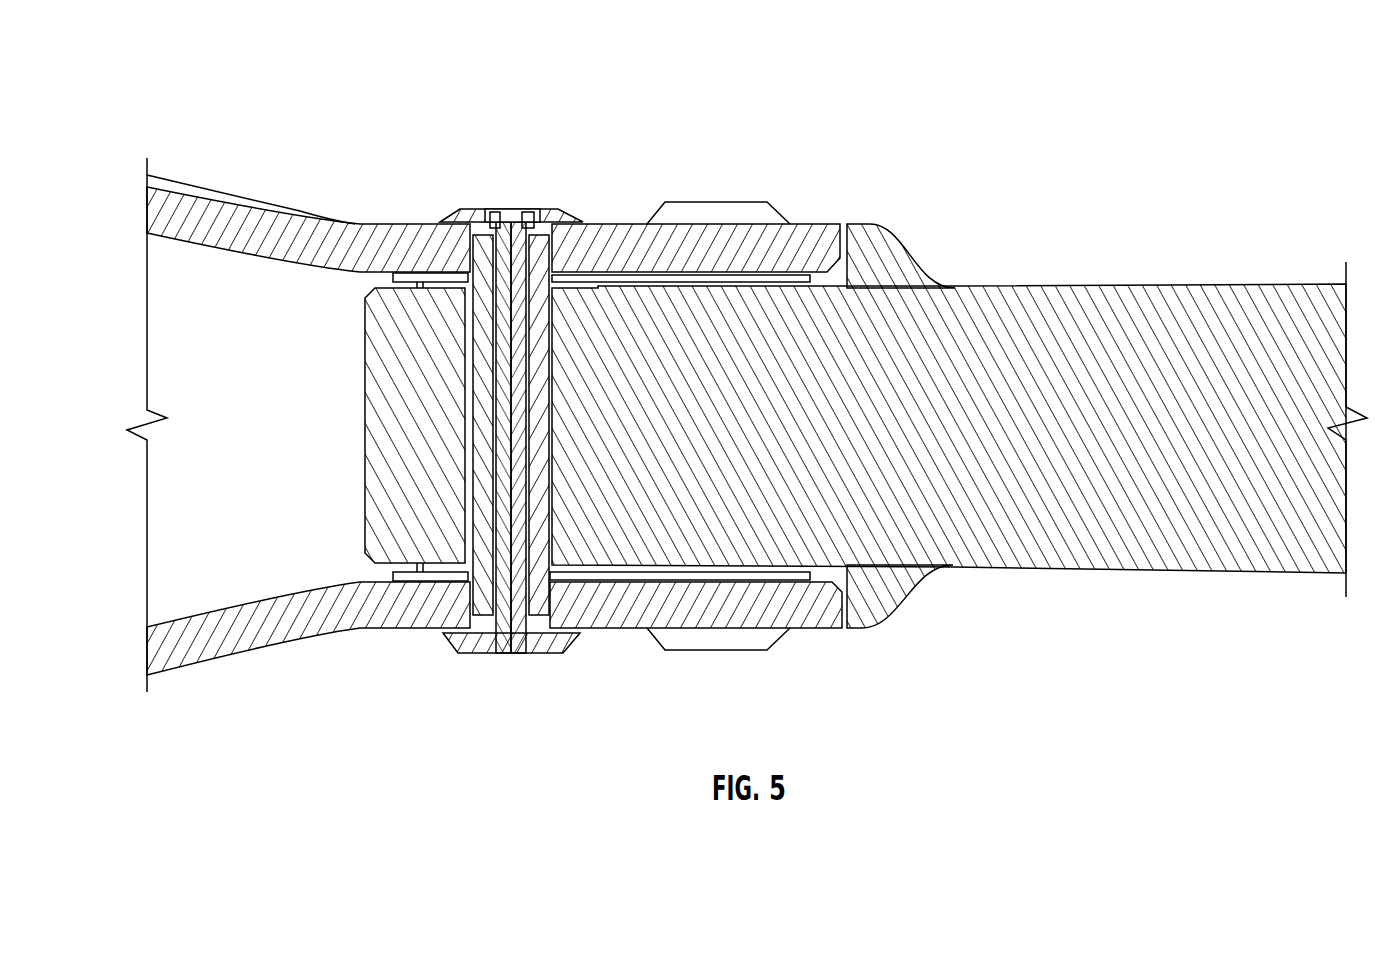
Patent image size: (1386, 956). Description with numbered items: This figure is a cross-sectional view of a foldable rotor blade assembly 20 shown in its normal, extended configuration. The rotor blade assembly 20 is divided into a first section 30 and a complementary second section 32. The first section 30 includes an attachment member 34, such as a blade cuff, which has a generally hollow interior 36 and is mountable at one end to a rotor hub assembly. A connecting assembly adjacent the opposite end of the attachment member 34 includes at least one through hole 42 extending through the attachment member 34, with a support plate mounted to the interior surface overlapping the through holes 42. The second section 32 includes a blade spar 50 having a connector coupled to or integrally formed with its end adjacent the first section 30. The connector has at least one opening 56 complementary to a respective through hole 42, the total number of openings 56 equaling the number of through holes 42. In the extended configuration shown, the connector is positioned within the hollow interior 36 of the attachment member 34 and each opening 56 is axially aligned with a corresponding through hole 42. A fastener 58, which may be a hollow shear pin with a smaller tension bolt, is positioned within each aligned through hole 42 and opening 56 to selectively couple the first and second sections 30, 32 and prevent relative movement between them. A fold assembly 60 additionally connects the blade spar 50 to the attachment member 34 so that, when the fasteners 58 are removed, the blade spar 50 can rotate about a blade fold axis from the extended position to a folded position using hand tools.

The rotor blade assembly 20 is at (735, 402).
The first section 30 is at (308, 427).
The second section 32 is at (958, 392).
The attachment member 34 is at (248, 648).
The hollow interior 36 is at (275, 435).
The through hole 42 is at (556, 250).
The blade spar 50 is at (932, 500).
The opening 56 is at (560, 525).
The fastener 58 is at (512, 240).
The fold assembly 60 is at (843, 212).